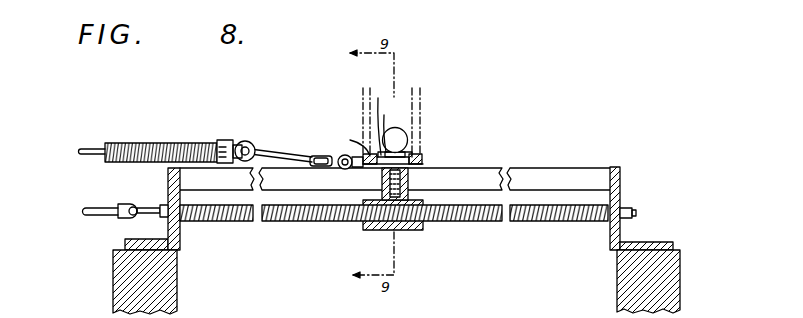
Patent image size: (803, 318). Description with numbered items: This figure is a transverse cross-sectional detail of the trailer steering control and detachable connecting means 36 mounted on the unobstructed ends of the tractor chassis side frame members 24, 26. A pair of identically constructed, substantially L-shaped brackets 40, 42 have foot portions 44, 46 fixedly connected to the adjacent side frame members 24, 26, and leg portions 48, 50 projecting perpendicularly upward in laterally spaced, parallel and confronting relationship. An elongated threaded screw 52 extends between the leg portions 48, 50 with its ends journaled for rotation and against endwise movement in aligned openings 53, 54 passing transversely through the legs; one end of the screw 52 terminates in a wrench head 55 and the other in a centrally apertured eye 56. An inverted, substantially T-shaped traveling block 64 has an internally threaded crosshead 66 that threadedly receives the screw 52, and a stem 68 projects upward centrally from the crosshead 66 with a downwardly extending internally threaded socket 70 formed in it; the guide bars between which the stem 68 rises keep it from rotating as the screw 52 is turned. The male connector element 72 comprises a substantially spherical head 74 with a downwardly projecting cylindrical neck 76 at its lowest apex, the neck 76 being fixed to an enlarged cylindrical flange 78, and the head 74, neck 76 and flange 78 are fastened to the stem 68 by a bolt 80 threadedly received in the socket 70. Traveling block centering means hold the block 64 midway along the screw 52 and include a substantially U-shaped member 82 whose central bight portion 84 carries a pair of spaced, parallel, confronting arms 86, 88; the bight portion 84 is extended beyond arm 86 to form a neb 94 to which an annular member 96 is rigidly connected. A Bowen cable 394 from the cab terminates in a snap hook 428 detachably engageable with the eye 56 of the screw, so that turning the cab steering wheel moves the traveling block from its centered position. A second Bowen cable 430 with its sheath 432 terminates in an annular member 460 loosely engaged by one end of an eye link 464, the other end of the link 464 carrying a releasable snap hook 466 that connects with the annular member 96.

The tractor chassis side frame member 24 is at (681, 284).
The tractor chassis side frame member 26 is at (118, 296).
The trailer steering control and detachable connecting means 36 is at (583, 141).
The L-shaped bracket 40 is at (628, 221).
The L-shaped bracket 42 is at (151, 219).
The foot portion 44 is at (661, 243).
The foot portion 46 is at (127, 241).
The leg portion 48 is at (619, 183).
The leg portion 50 is at (167, 178).
The threaded screw 52 is at (306, 224).
The opening 53 is at (634, 209).
The opening 54 is at (166, 220).
The wrench head 55 is at (636, 215).
The centrally-apertured eye 56 is at (138, 207).
The traveling block 64 is at (370, 192).
The crosshead 66 is at (375, 231).
The stem 68 is at (410, 180).
The socket 70 is at (404, 184).
The male connector element 72 is at (404, 128).
The spherical head 74 is at (404, 139).
The cylindrical neck 76 is at (409, 153).
The cylindrical flange 78 is at (415, 160).
The bolt 80 is at (428, 168).
The U-shaped member 82 is at (363, 118).
The bight portion 84 is at (386, 125).
The arm 86 is at (362, 130).
The arm 88 is at (425, 102).
The neb 94 is at (340, 172).
The annular member 96 is at (339, 157).
The Bowen cable 394 is at (105, 201).
The snap hook 428 is at (120, 216).
The second Bowen cable 430 is at (86, 148).
The sheath 432 is at (156, 142).
The annular member 460 is at (249, 141).
The eye link 464 is at (279, 149).
The releasable snap hook 466 is at (322, 167).